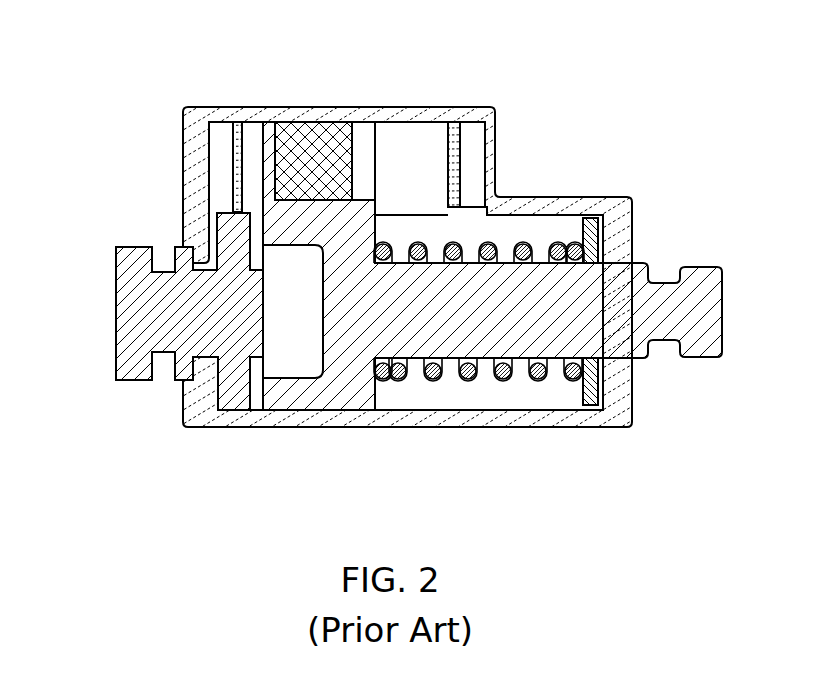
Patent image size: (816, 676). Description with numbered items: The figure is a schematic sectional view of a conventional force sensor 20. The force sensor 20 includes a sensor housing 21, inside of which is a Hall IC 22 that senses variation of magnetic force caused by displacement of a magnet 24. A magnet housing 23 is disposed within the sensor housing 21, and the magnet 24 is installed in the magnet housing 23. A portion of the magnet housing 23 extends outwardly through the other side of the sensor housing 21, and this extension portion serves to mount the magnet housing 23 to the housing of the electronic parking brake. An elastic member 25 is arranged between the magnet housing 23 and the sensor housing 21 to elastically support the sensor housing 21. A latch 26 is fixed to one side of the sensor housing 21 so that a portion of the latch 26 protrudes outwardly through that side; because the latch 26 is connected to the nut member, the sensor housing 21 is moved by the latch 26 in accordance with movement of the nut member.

The force sensor 20 is at (578, 128).
The sensor housing 21 is at (404, 418).
The Hall IC 22 is at (470, 152).
The magnet housing 23 is at (557, 340).
The magnet 24 is at (313, 140).
The elastic member 25 is at (460, 386).
The latch 26 is at (148, 302).